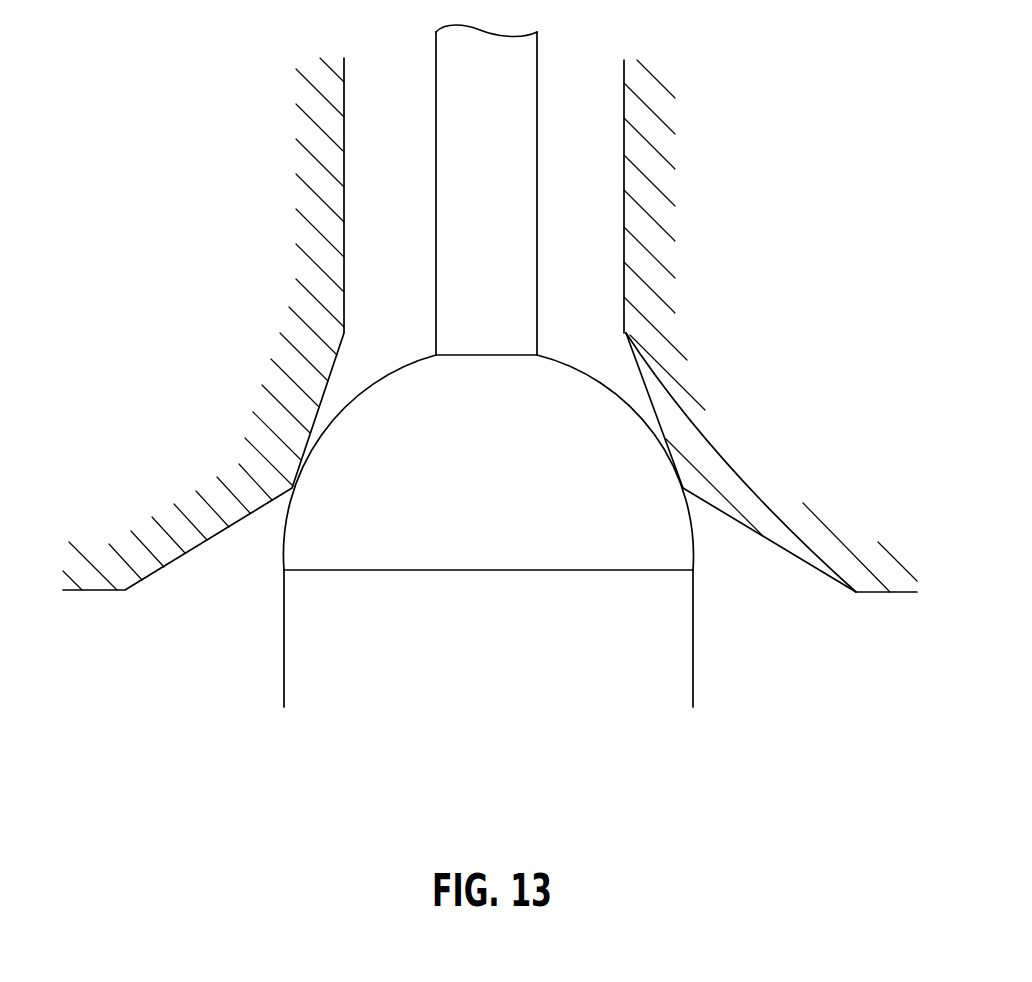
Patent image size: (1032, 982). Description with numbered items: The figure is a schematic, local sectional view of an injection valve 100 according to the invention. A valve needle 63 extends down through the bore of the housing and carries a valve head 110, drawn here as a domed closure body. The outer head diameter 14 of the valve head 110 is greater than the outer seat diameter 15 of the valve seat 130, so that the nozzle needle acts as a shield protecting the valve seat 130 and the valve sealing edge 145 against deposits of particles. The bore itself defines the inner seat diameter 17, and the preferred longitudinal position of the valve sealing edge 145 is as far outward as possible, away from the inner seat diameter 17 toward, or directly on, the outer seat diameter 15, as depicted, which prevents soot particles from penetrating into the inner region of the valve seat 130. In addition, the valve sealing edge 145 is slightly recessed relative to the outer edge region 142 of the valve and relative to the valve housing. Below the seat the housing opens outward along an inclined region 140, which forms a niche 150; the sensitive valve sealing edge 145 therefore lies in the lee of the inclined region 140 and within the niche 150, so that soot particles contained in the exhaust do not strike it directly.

The injection valve 100 is at (200, 225).
The valve needle 63 is at (503, 133).
The inner seat diameter 17 is at (613, 333).
The outer seat diameter 15 is at (671, 489).
The outer head diameter 14 is at (681, 702).
The valve seat 130 is at (670, 390).
The valve sealing edge 145 is at (683, 490).
The valve head 110 is at (312, 538).
The niche 150 is at (705, 520).
The inclined region 140 is at (805, 562).
The outer edge region 142 is at (882, 593).